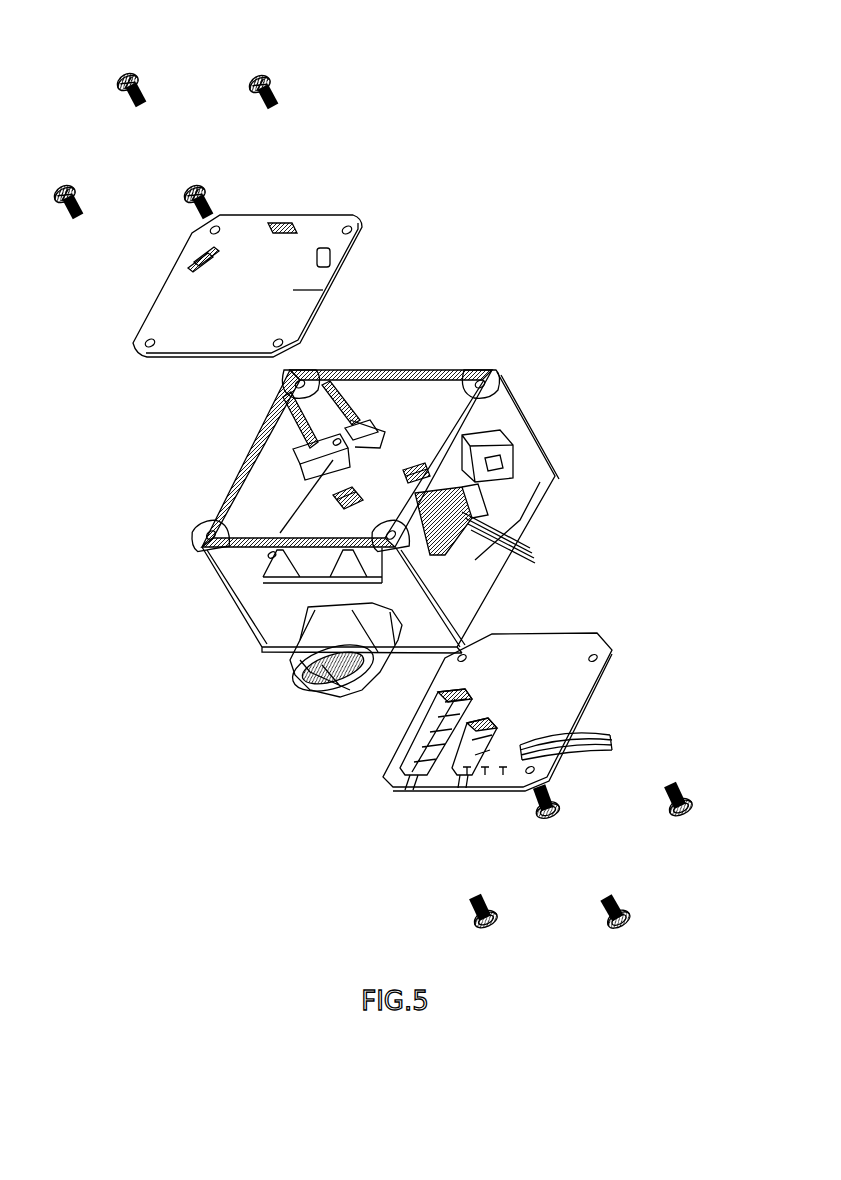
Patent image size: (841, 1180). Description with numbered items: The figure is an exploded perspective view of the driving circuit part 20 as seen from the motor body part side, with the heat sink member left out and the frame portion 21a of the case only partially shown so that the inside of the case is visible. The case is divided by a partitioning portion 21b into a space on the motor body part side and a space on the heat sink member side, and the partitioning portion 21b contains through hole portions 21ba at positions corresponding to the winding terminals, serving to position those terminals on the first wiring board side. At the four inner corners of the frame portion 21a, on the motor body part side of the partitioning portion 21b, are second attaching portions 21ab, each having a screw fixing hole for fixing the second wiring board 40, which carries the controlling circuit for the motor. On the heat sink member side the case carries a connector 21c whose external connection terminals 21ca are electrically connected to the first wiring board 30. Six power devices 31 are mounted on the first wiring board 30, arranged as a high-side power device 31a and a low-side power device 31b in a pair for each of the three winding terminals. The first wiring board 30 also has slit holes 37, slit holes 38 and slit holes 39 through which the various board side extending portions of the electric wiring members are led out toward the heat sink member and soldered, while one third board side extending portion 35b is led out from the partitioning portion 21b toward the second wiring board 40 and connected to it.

The driving circuit part 20 is at (346, 27).
The frame portion 21a is at (413, 388).
The second attaching portions 21ab is at (356, 428).
The partitioning portion 21b is at (535, 500).
The through hole portions 21ba is at (425, 462).
The connector 21c is at (320, 625).
The external connection terminals 21ca is at (358, 690).
The first wiring board 30 is at (563, 637).
The power devices 31 is at (290, 735).
The high-side power device 31a is at (397, 738).
The low-side power device 31b is at (397, 717).
The one third board side extending portion 35b is at (533, 553).
The slit holes 37 is at (467, 775).
The slit holes 38 is at (503, 775).
The slit holes 39 is at (605, 748).
The second wiring board 40 is at (193, 350).